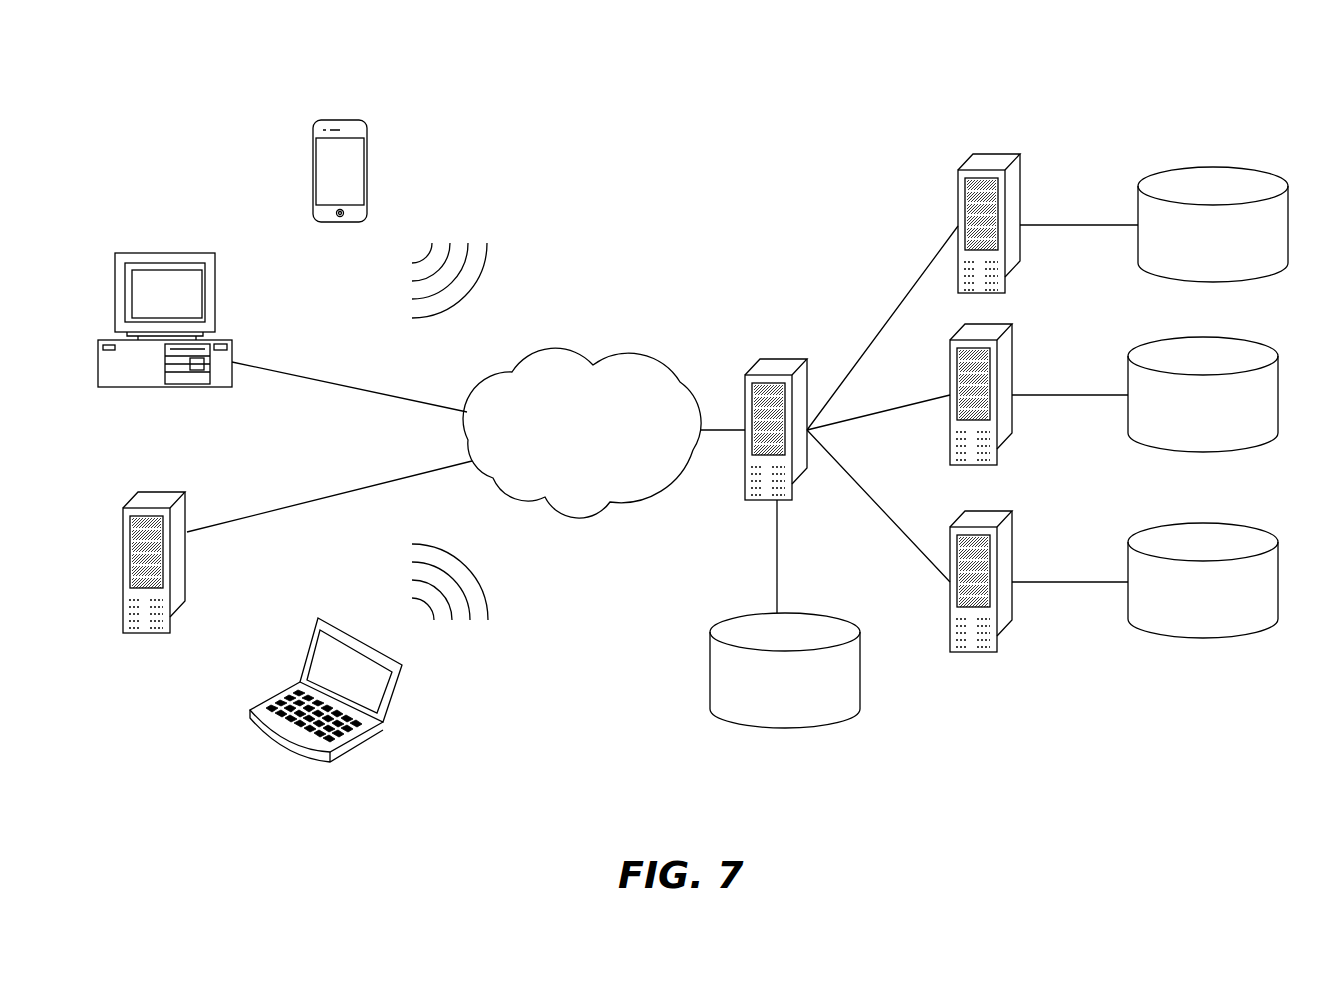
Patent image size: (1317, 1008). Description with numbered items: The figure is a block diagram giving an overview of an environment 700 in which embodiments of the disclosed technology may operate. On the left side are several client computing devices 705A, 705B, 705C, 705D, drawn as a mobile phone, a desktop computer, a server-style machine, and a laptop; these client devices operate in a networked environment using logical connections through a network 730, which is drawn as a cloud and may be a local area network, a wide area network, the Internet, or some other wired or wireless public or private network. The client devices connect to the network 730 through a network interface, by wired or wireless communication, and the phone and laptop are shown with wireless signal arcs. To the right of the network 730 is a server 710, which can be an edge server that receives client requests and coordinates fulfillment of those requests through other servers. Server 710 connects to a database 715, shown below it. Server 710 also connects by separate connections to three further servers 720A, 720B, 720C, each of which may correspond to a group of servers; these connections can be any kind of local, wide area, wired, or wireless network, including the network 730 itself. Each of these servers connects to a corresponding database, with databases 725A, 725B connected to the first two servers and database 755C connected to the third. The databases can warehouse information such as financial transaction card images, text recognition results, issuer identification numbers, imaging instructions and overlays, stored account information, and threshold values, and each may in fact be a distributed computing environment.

The environment 700 is at (793, 128).
The client computing device 705A is at (367, 132).
The client computing device 705B is at (207, 253).
The client computing device 705C is at (187, 492).
The client computing device 705D is at (400, 693).
The network 730 is at (638, 350).
The server 710 is at (787, 358).
The database 715 is at (837, 617).
The server 720A is at (1020, 154).
The server 720B is at (1012, 323).
The server 720C is at (1012, 510).
The database 725A is at (1210, 167).
The database 725B is at (1200, 337).
The database 755C is at (1197, 523).